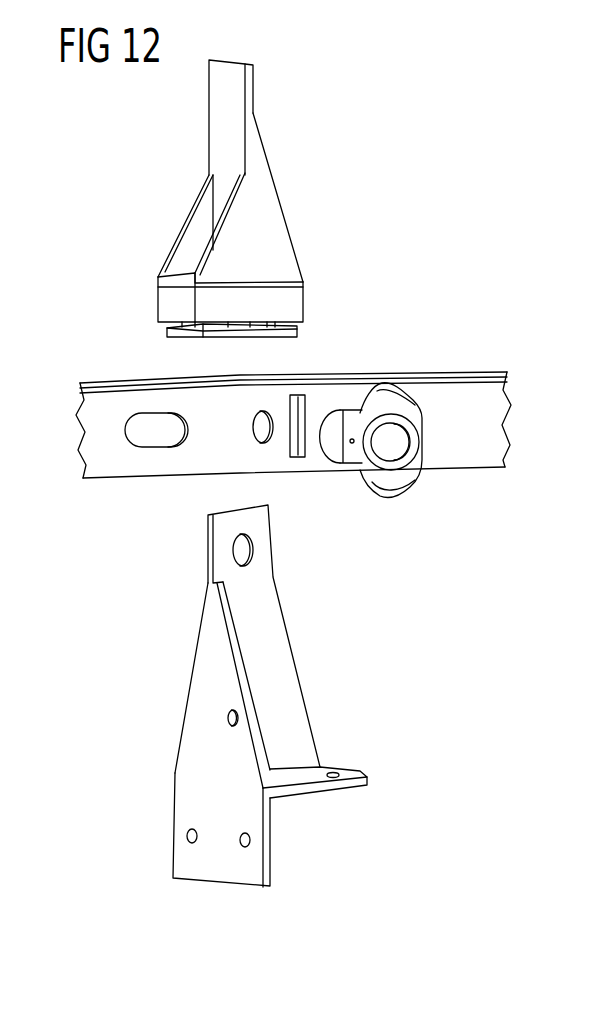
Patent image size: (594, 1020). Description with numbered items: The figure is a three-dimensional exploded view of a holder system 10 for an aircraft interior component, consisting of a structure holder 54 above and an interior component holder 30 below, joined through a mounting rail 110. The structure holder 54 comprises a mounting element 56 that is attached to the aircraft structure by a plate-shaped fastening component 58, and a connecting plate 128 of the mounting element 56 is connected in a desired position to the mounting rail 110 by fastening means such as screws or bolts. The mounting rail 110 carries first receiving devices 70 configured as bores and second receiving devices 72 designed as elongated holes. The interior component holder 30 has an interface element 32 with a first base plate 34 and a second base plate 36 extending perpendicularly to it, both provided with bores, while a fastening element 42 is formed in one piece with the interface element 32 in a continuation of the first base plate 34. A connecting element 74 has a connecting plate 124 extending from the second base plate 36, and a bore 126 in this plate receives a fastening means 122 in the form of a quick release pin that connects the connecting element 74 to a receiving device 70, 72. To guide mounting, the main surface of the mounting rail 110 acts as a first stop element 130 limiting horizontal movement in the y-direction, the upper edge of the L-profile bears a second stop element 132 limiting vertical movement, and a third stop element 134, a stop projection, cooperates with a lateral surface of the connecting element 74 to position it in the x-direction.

The holder system 10 is at (452, 138).
The interior component holder 30 is at (138, 810).
The interface element 32 is at (298, 822).
The first base plate 34 is at (182, 858).
The second base plate 36 is at (343, 772).
The fastening element 42 is at (203, 666).
The structure holder 54 is at (337, 282).
The mounting element 56 is at (282, 237).
The plate-shaped fastening component 58 is at (220, 111).
The first receiving device 70 is at (255, 425).
The second receiving device 72 is at (155, 433).
The connecting element 74 is at (325, 663).
The mounting rail 110 is at (493, 418).
The fastening means 122 is at (397, 440).
The connecting plate 124 is at (290, 683).
The bore 126 is at (250, 548).
The connecting plate 128 is at (167, 330).
The first stop element 130 is at (107, 468).
The second stop element 132 is at (440, 377).
The third stop element 134 is at (290, 440).